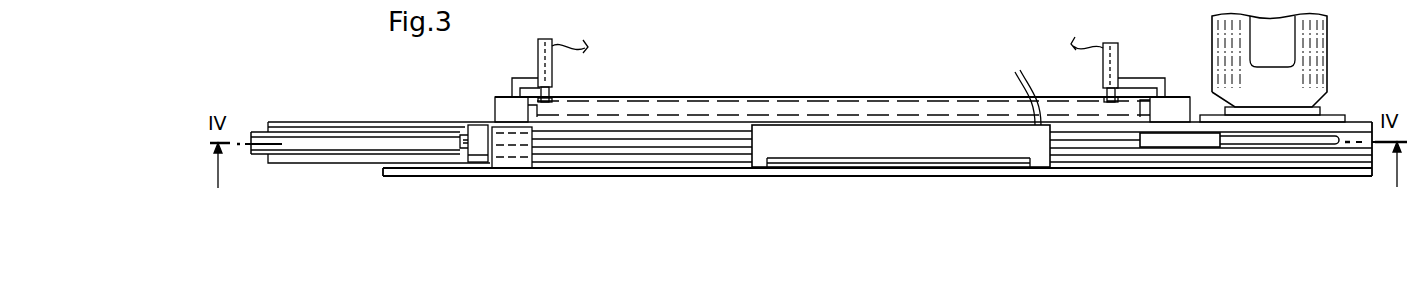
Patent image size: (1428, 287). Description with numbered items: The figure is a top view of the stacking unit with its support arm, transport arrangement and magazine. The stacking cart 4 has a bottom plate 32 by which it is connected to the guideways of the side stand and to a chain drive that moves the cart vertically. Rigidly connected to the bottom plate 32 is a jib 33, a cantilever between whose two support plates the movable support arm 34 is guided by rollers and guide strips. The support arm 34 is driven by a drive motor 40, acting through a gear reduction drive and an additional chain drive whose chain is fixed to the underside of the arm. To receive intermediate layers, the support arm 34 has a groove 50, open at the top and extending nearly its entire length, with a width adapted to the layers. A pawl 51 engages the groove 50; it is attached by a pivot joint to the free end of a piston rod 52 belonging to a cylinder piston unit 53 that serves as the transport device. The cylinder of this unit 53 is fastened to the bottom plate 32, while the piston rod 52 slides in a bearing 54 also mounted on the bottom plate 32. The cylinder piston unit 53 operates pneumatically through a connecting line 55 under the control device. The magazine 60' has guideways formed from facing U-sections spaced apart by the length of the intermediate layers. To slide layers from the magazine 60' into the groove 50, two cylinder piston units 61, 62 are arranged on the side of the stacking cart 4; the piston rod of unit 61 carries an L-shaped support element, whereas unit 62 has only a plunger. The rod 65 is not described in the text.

The stacking cart 4 is at (867, 91).
The bottom plate 32 is at (830, 172).
The jib 33 is at (420, 163).
The support arm 34 is at (303, 147).
The drive motor 40 is at (1287, 50).
The groove 50 is at (364, 146).
The pawl 51 is at (465, 146).
The piston rod 52 is at (614, 143).
The cylinder piston unit 53 is at (932, 150).
The bearing 54 is at (525, 166).
The connecting line 55 is at (1029, 82).
The magazine 60' is at (843, 89).
The cylinder piston unit 61 is at (546, 73).
The cylinder piston unit 62 is at (1106, 70).
The rod 65 is at (1262, 144).